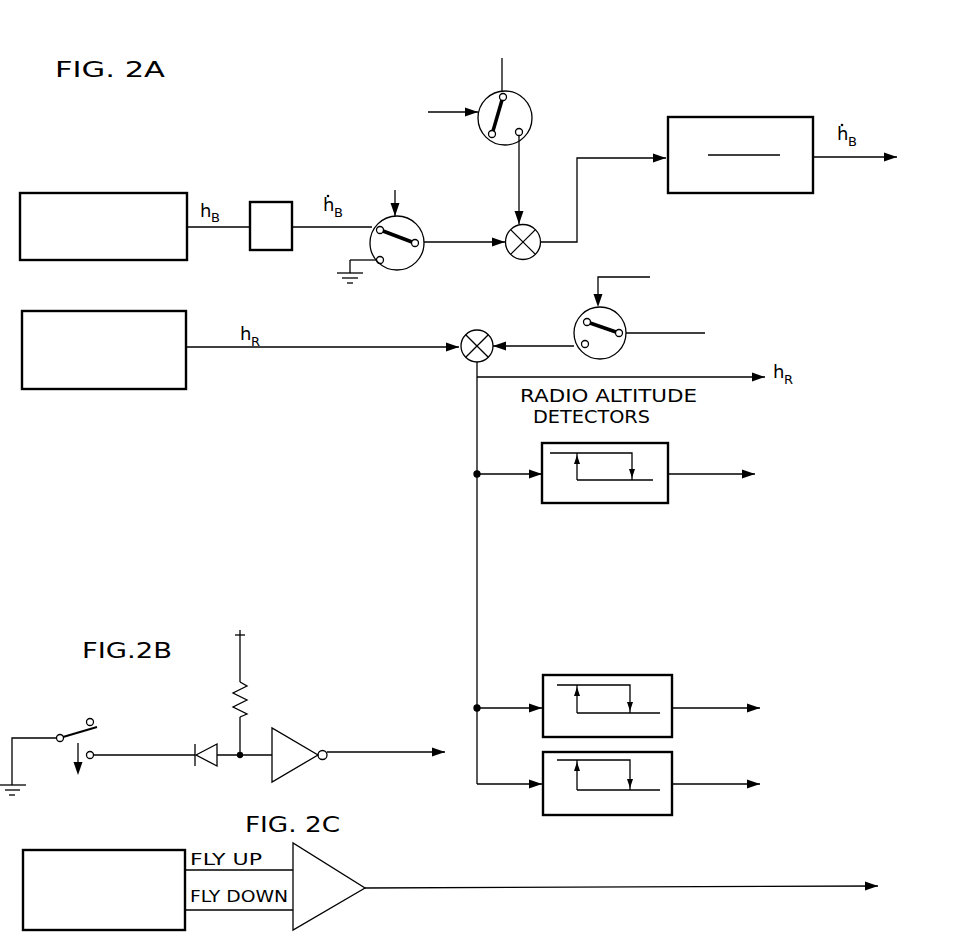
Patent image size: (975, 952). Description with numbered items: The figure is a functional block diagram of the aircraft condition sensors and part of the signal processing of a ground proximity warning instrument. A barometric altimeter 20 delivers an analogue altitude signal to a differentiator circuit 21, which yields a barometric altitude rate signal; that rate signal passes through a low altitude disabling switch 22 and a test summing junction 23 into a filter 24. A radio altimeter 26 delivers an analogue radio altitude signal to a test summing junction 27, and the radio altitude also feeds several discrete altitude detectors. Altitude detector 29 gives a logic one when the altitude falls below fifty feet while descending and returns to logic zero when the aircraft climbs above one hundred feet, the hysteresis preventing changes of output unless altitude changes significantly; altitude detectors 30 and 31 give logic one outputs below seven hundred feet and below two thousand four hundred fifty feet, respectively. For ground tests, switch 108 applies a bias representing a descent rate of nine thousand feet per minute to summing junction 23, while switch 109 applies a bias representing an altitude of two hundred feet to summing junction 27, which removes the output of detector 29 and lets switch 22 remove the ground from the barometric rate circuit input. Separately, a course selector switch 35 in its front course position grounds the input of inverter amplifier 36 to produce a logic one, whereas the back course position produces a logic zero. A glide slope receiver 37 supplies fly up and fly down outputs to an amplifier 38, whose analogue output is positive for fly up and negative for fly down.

In FIG. 2A, the barometric altimeter 20 is at (82, 194).
In FIG. 2A, the differentiator (S block) 21 is at (262, 203).
In FIG. 2A, the low altitude disabling switch 22 is at (402, 258).
In FIG. 2A, the test summing junction 23 is at (525, 252).
In FIG. 2A, the filter 24 is at (773, 123).
In FIG. 2A, the radio altimeter 26 is at (104, 376).
In FIG. 2A, the test summing junction 27 is at (478, 331).
In FIG. 2A, the altitude detector 29 is at (660, 458).
In FIG. 2A, the altitude detector 30 is at (663, 688).
In FIG. 2A, the altitude detector 31 is at (663, 760).
In FIG. 2A, the switch 108 is at (518, 107).
In FIG. 2A, the switch 109 is at (617, 320).
In FIG. 2B, the course selector switch 35 is at (75, 728).
In FIG. 2B, the inverter amplifier 36 is at (285, 745).
In FIG. 2C, the glide slope receiver 37 is at (163, 855).
In FIG. 2C, the amplifier 38 is at (323, 873).